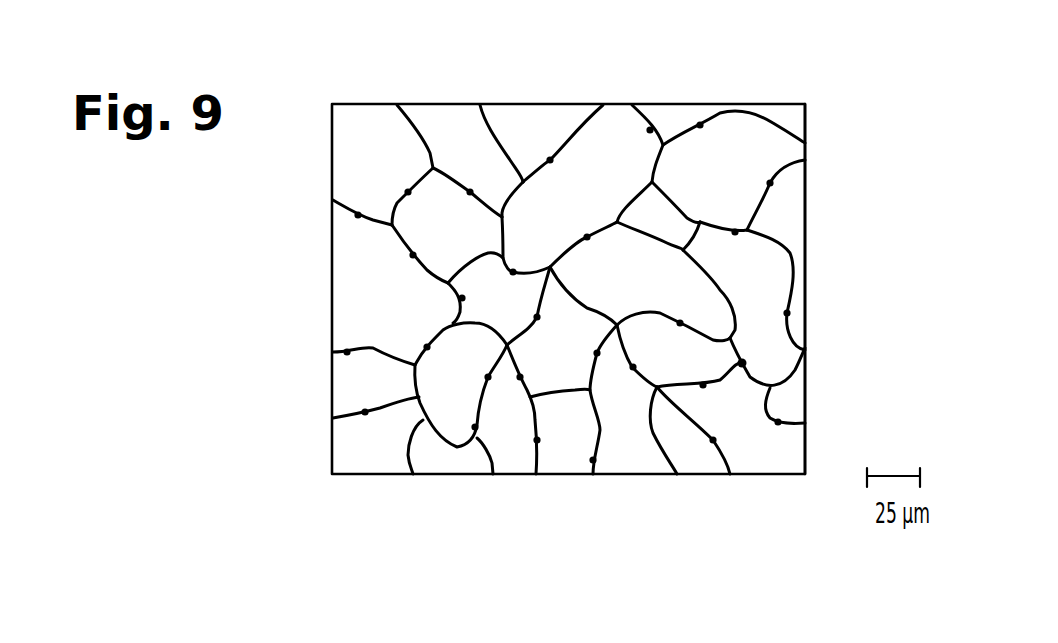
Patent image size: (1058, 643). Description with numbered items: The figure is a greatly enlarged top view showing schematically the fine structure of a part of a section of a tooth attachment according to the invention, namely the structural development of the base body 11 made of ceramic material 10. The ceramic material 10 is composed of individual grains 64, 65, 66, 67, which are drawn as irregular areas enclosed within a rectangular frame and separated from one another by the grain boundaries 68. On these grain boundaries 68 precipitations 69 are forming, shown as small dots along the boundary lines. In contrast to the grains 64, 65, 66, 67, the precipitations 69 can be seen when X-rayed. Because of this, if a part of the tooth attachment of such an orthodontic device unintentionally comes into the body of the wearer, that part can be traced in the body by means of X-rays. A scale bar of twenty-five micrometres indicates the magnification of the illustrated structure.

The ceramic material 10 is at (827, 177).
The base body 11 is at (833, 108).
The grain 64 is at (628, 462).
The grain 65 is at (453, 420).
The grain 66 is at (603, 158).
The grain 67 is at (773, 295).
The grain boundaries 68 is at (377, 348).
The precipitations 69 is at (402, 187).